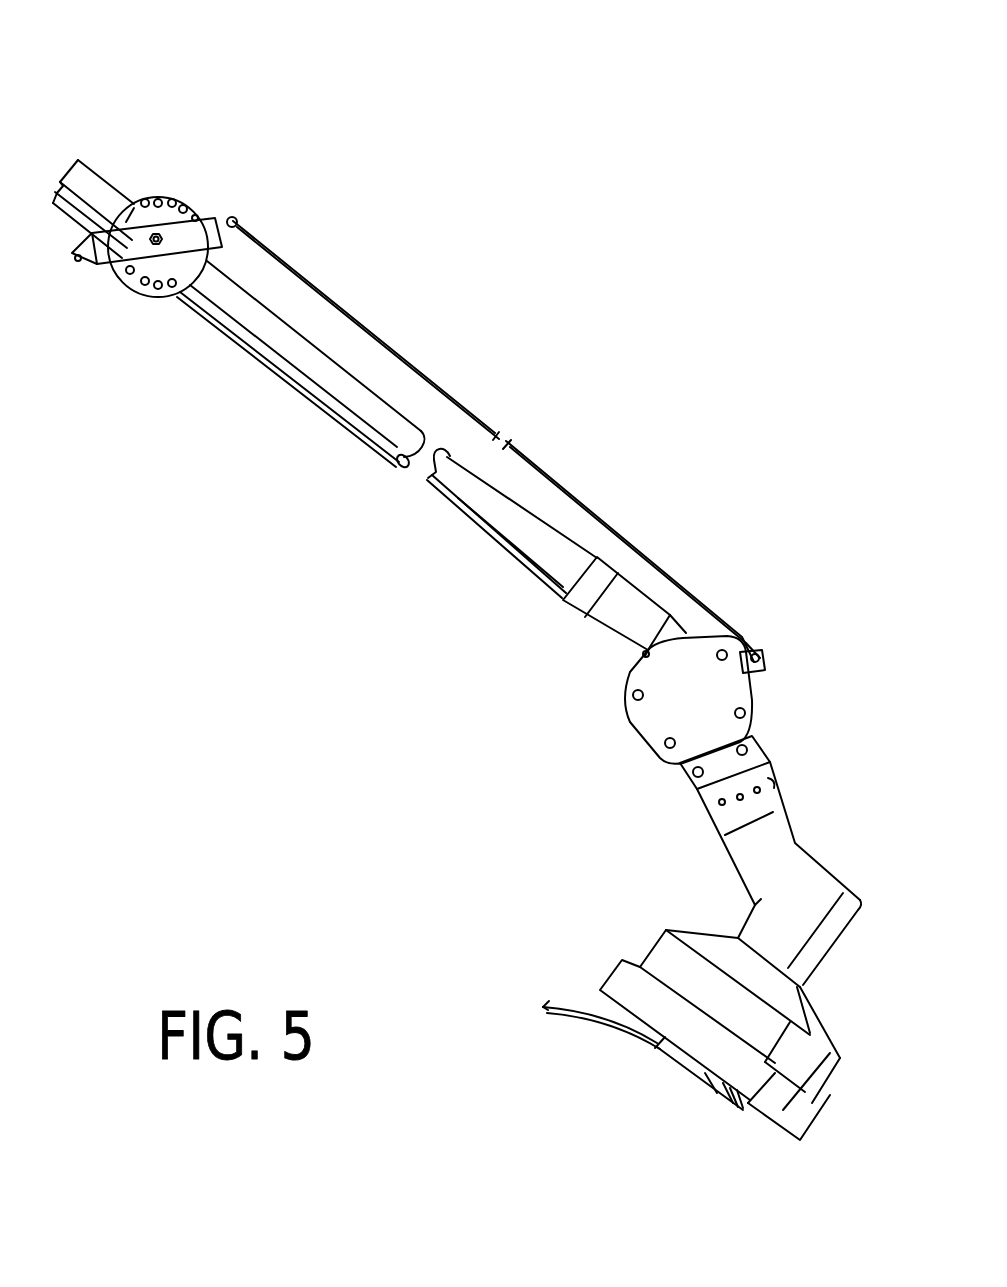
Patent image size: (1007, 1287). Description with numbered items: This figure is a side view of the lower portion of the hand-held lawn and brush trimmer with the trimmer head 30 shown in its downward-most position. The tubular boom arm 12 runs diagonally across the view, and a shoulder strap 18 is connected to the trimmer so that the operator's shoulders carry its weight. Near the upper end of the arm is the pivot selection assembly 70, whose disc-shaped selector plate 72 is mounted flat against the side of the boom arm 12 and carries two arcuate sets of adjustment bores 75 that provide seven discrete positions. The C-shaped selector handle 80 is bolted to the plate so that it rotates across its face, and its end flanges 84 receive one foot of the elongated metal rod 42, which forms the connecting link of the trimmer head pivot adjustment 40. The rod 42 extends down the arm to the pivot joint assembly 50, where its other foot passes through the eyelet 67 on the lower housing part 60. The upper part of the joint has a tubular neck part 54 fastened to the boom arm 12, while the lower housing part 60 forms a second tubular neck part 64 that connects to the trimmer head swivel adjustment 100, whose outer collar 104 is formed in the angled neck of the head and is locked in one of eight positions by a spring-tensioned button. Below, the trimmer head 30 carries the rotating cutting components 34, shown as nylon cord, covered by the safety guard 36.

The tubular boom arm 12 is at (356, 434).
The shoulder strap 18 is at (163, 243).
The trimmer head 30 is at (832, 955).
The rotating cutting components 34 is at (785, 852).
The safety guard 36 is at (637, 990).
The trimmer head pivot adjustment 40 is at (717, 552).
The elongated metal rod 42 is at (328, 297).
The pivot joint assembly 50 is at (634, 737).
The tubular neck part 54 is at (602, 622).
The lower housing part 60 is at (730, 697).
The tubular neck part 64 is at (687, 767).
The eyelet 67 is at (763, 650).
The pivot selection assembly 70 is at (152, 306).
The selector plate 72 is at (130, 220).
The adjustment bores 75 is at (183, 205).
The selector handle 80 is at (122, 252).
The end flanges 84 is at (230, 220).
The trimmer head swivel adjustment 100 is at (717, 826).
The outer collar 104 is at (790, 811).